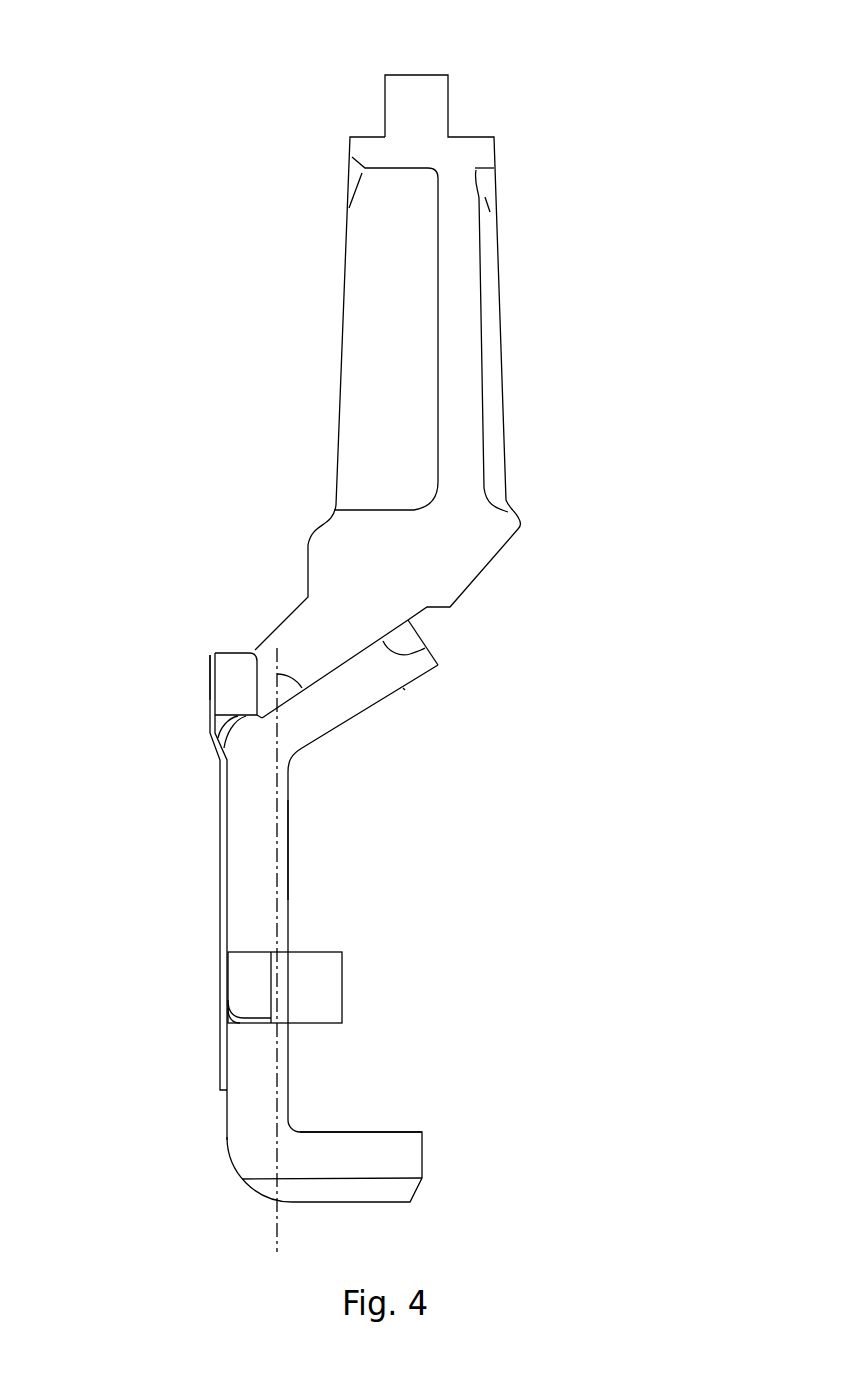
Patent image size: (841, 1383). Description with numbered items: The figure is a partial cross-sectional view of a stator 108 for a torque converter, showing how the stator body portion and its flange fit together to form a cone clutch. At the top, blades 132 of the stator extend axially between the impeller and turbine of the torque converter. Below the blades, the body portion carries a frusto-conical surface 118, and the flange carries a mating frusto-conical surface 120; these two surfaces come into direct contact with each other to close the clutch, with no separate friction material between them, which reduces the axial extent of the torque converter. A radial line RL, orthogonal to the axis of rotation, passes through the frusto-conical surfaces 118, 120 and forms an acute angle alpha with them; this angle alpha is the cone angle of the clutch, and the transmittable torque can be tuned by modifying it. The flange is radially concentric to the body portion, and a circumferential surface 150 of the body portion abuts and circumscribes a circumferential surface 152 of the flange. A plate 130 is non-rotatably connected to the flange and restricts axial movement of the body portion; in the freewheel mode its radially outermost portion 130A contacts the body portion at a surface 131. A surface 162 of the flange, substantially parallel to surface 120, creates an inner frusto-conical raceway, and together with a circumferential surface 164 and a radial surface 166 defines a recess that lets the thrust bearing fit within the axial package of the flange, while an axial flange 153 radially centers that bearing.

The stator 108 is at (416, 635).
The blades 132 is at (455, 295).
The frusto-conical surface 118 is at (441, 648).
The frusto-conical surface 120 is at (363, 647).
The surface 162 is at (403, 688).
The radial surface 166 is at (290, 817).
The circumferential surface 150 is at (233, 717).
The radially outermost portion 130A is at (210, 672).
The surface 131 is at (210, 693).
The circumferential surface 152 is at (240, 721).
The plate 130 is at (220, 866).
The axial flange 153 is at (325, 982).
The circumferential surface 164 is at (373, 1130).
The radial line RL is at (277, 1228).
The angle alpha is at (296, 661).